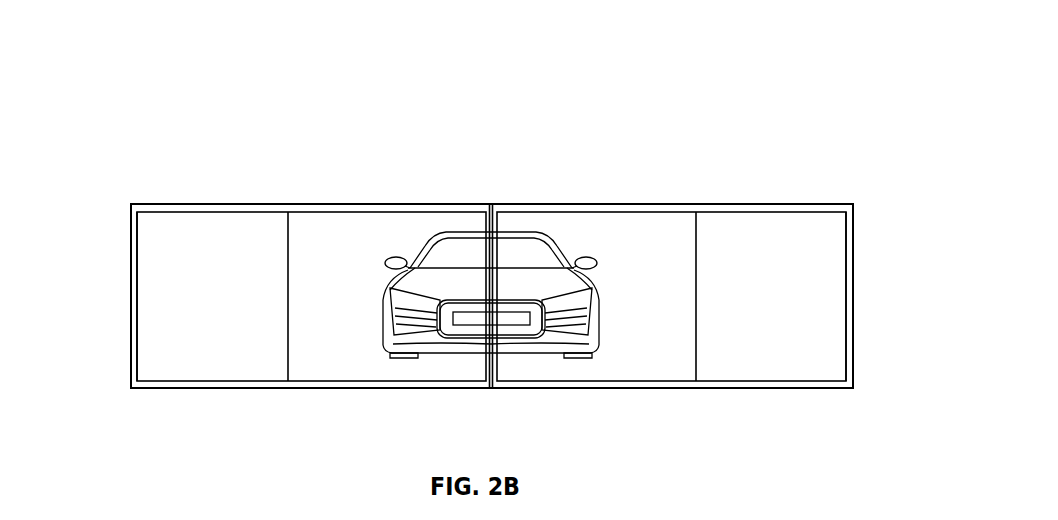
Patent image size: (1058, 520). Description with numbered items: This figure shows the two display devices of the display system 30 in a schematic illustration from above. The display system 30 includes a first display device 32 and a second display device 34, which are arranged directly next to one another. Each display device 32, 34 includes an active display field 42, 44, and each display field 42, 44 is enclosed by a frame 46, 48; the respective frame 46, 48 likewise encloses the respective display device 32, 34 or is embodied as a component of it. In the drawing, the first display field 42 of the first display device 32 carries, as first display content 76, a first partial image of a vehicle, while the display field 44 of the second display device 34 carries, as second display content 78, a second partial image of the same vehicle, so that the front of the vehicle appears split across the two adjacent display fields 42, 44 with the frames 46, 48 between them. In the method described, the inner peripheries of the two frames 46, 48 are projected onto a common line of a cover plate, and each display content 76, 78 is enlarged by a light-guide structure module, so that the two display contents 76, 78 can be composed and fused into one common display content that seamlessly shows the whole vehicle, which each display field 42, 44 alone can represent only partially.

The display system 30 is at (822, 124).
The first display device 32 is at (289, 173).
The second display device 34 is at (696, 173).
The first display field 42 is at (256, 353).
The second display field 44 is at (754, 358).
The first frame 46 is at (135, 271).
The second frame 48 is at (850, 268).
The first display content 76 is at (344, 275).
The second display content 78 is at (661, 275).